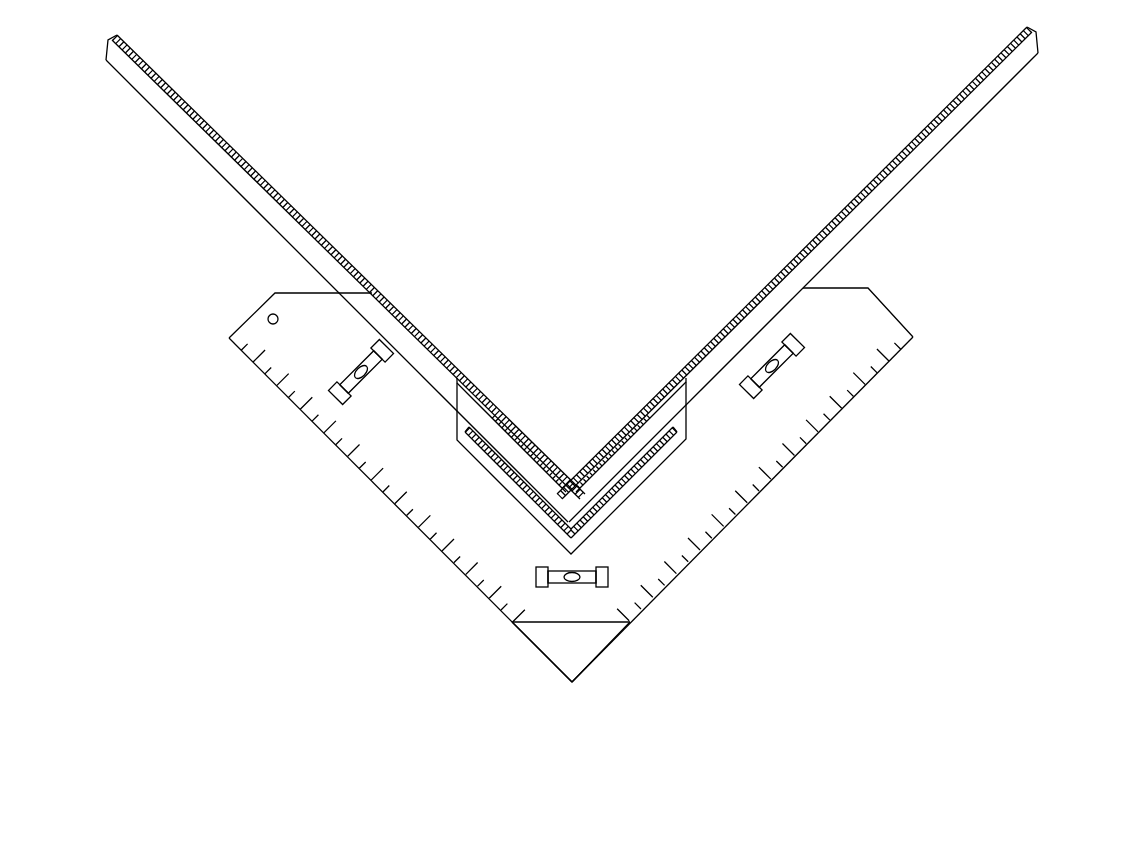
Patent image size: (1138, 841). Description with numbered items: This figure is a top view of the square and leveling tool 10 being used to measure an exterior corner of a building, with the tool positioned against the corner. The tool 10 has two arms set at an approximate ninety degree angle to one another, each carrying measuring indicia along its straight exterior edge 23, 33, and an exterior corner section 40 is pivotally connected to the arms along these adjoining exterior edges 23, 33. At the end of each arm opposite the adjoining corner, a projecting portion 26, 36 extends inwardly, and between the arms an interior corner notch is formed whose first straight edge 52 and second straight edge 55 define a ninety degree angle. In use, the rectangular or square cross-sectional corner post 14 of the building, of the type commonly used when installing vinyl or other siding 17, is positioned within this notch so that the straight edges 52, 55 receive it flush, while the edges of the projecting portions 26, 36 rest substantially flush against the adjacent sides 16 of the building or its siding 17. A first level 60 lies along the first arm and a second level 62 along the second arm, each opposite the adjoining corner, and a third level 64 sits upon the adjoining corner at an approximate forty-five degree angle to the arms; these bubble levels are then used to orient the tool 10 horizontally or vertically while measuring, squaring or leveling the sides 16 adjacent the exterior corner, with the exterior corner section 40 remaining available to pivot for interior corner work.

The square and leveling tool 10 is at (600, 382).
The corner post 14 is at (604, 458).
The sides 16 is at (572, 274).
The siding 17 is at (222, 183).
The exterior edge 23 is at (343, 452).
The projecting portion 26 is at (381, 474).
The exterior edge 33 is at (795, 488).
The projecting portion 36 is at (780, 467).
The exterior corner section 40 is at (562, 643).
The first straight edge 52 is at (497, 468).
The second straight edge 55 is at (610, 440).
The first level 60 is at (338, 373).
The second level 62 is at (797, 377).
The third level 64 is at (584, 584).